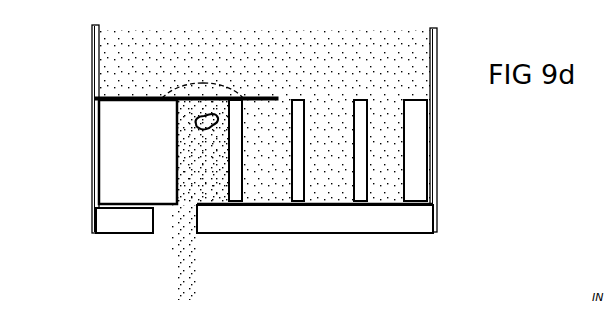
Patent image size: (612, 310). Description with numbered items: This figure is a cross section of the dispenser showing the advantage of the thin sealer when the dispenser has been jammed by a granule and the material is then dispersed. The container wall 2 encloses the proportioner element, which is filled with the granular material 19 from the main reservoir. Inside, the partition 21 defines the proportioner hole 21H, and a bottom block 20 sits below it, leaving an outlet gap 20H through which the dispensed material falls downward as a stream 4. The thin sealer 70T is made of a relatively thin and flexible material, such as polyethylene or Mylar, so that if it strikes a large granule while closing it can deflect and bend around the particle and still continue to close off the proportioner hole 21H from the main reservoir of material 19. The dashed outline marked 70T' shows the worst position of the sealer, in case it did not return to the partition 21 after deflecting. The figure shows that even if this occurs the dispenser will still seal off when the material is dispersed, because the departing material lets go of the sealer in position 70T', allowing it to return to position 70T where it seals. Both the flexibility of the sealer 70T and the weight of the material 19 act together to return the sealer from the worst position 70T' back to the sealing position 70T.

The container wall 2 is at (92, 49).
The material 19 is at (265, 117).
The bottom block 20 is at (142, 223).
The bottom outlet gap 20H is at (189, 235).
The partition 21 is at (114, 154).
The proportioner hole 21H is at (215, 190).
The falling powder stream 4 is at (176, 288).
The thin sealer 70T is at (247, 57).
The worst position of thin sealer 70T' is at (202, 57).